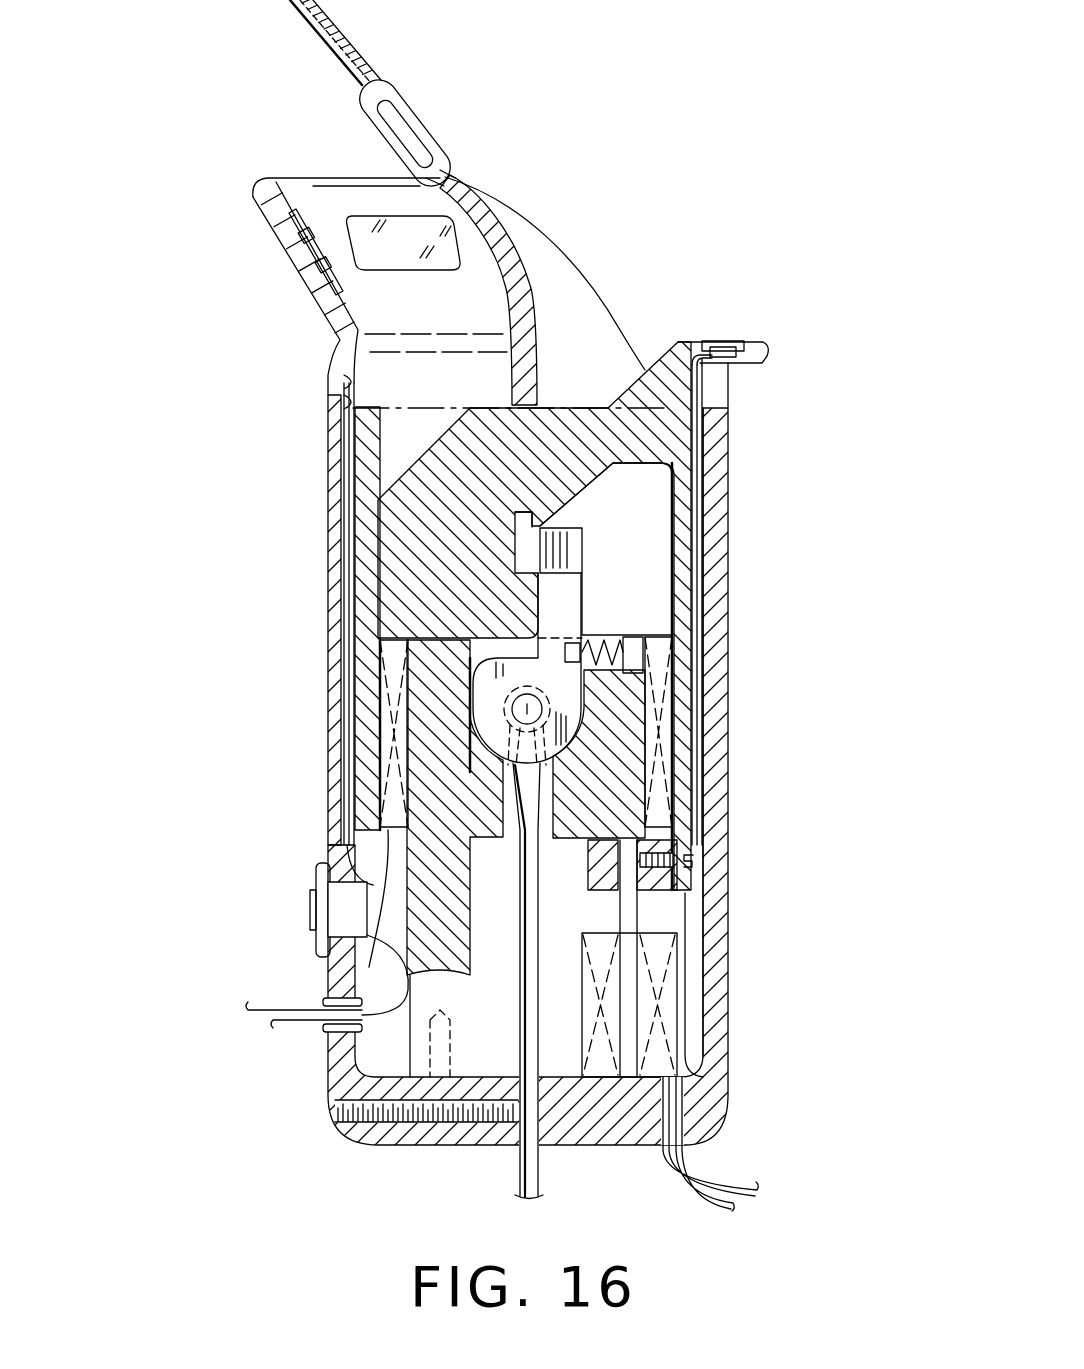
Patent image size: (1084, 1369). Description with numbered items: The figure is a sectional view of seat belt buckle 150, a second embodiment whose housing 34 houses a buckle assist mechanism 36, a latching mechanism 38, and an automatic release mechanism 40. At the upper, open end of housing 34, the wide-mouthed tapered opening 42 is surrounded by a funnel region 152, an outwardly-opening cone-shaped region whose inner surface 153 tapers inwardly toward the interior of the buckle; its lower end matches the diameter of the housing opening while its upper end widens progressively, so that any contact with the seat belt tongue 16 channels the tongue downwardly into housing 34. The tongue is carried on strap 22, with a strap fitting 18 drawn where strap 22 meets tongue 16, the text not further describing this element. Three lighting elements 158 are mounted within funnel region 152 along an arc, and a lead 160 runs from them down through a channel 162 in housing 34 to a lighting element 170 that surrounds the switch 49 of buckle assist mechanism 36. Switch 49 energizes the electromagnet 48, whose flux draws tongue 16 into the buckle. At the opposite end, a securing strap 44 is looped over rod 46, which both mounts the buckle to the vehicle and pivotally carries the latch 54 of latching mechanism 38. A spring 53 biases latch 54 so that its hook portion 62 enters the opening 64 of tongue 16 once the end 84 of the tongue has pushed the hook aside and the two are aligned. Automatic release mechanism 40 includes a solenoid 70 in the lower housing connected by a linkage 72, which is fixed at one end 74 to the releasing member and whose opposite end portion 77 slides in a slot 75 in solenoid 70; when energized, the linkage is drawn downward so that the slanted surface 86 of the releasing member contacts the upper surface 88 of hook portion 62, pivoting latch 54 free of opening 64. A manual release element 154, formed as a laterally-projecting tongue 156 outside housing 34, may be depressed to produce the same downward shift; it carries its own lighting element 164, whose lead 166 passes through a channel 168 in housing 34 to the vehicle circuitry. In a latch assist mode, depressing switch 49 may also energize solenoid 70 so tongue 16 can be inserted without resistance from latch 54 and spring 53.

The seat belt tongue 16 is at (500, 467).
The strap buckle 18 is at (312, 94).
The strap 22 is at (316, 30).
The housing 34 is at (718, 712).
The buckle assist mechanism 36 is at (304, 768).
The latching mechanism 38 is at (752, 513).
The automatic release mechanism 40 is at (693, 973).
The tapered opening 42 is at (576, 312).
The securing strap 44 is at (515, 1176).
The rod 46 is at (512, 710).
The electromagnet 48 is at (390, 763).
The switch 49 is at (318, 910).
The spring 53 is at (640, 652).
The latch 54 is at (600, 610).
The hook portion 62 is at (562, 572).
The opening 64 is at (497, 470).
The solenoid 70 is at (703, 1028).
The linkage 72 is at (632, 917).
The end 74 is at (673, 853).
The slot 75 is at (665, 1010).
The end portion 77 is at (628, 1085).
The end 84 is at (470, 660).
The slanted surface 86 is at (560, 522).
The upper surface 88 is at (565, 497).
The seat belt buckle 150 is at (222, 153).
The funnel region 152 is at (316, 170).
The inner surface 153 is at (345, 283).
The manual release element 154 is at (709, 322).
The laterally-projecting tongue 156 is at (770, 355).
The lighting elements 158 is at (387, 235).
The lead 160 is at (340, 382).
The channel 162 is at (345, 404).
The lighting element 164 is at (722, 348).
The lead 166 is at (692, 432).
The channel 168 is at (692, 500).
The lighting element 170 is at (320, 862).